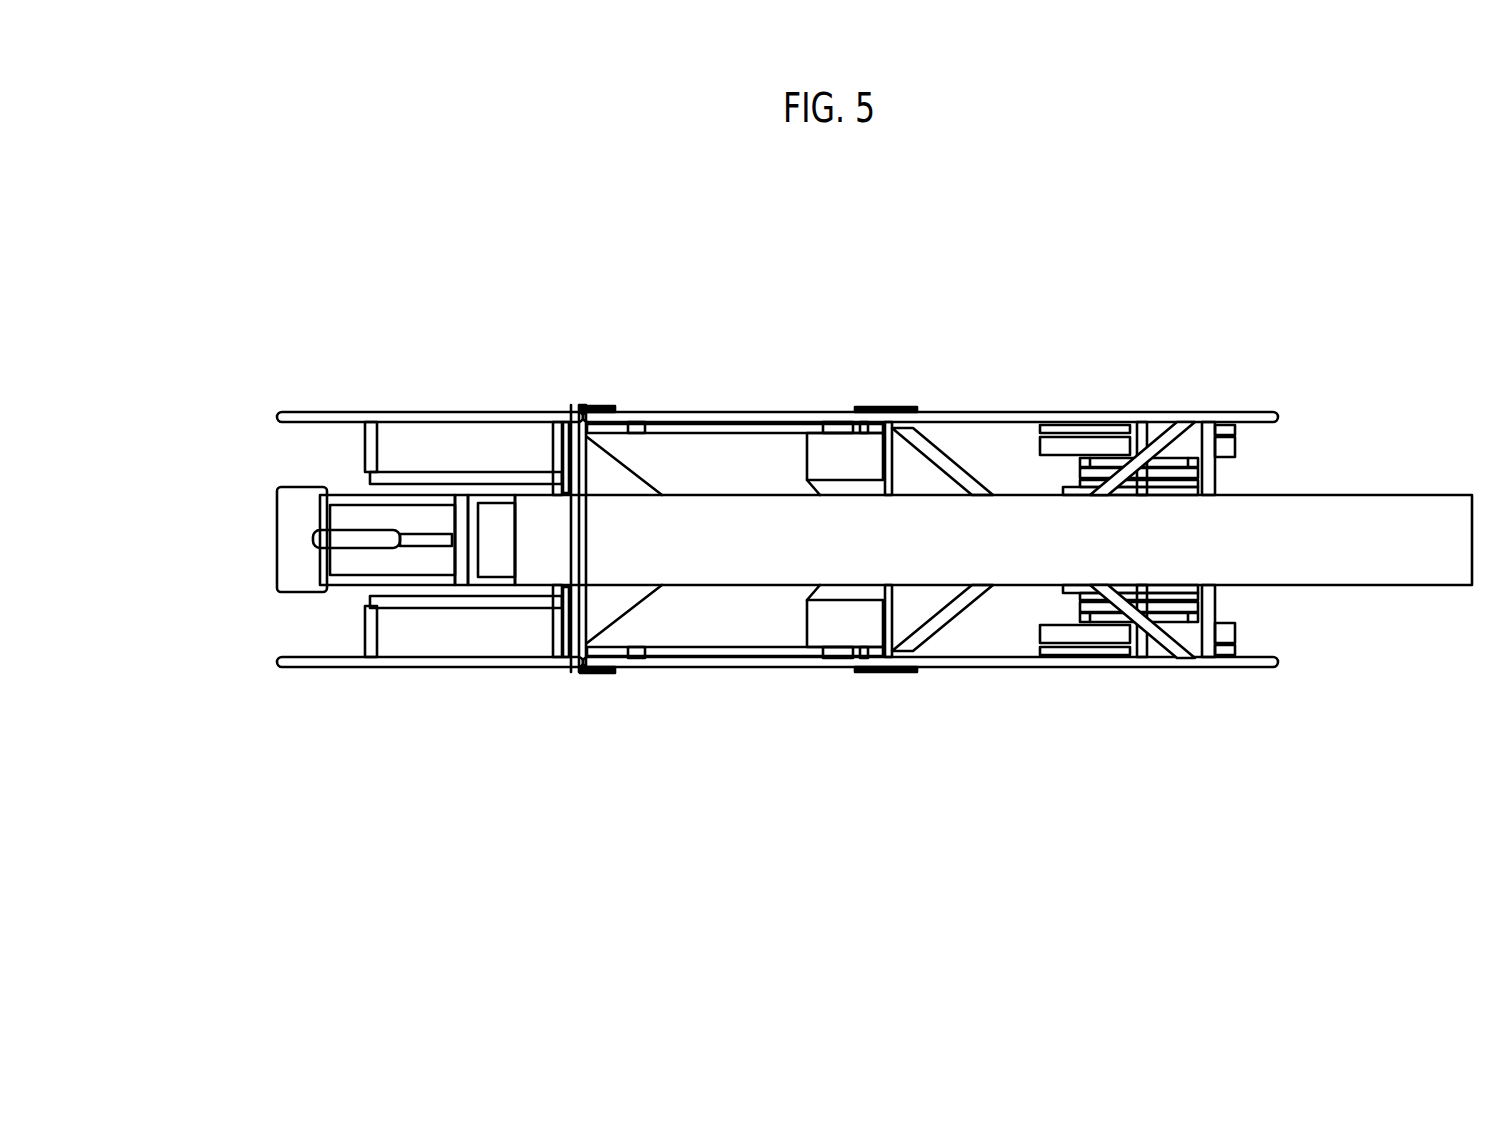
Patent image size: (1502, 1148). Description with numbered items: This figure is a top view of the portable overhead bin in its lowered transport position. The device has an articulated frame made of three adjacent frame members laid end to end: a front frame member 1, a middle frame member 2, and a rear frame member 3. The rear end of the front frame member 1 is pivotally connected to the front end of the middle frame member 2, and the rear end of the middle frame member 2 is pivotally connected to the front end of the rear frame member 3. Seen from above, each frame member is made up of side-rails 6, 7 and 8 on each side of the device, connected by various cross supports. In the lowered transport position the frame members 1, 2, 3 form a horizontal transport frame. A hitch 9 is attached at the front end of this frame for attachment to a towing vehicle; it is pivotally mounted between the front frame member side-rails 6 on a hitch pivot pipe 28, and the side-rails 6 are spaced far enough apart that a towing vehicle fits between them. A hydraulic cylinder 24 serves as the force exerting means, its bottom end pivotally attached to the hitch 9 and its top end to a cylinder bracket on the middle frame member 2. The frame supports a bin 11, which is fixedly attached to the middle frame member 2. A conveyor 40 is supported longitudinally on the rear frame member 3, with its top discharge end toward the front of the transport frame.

The front frame member 1 is at (443, 606).
The middle frame member 2 is at (751, 620).
The rear frame member 3 is at (1137, 660).
The side-rails 6 is at (430, 523).
The side-rails 7 is at (711, 493).
The side-rails 8 is at (929, 582).
The hitch 9 is at (254, 553).
The bin 11 is at (790, 640).
The hydraulic cylinder 24 is at (321, 684).
The hitch pivot pipe 28 is at (523, 448).
The conveyor 40 is at (993, 451).